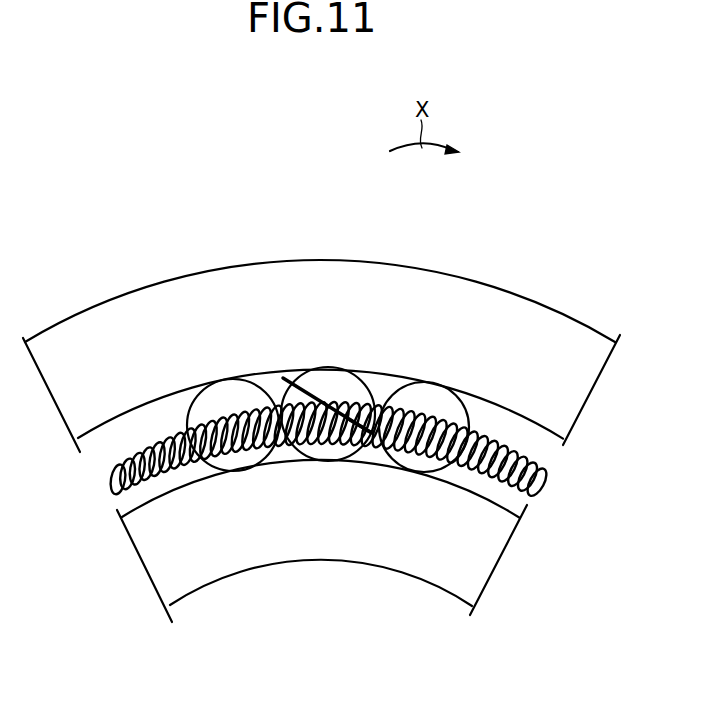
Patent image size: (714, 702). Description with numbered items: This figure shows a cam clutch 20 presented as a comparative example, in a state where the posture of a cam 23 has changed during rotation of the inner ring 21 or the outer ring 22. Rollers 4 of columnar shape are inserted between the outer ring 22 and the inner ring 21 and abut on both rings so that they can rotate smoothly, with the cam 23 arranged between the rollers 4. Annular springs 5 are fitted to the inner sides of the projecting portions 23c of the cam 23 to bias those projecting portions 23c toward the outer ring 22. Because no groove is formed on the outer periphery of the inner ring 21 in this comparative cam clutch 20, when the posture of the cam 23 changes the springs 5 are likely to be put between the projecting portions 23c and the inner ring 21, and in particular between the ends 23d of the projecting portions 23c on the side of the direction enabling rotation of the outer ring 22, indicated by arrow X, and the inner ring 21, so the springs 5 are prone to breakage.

The cam clutch 20 is at (336, 159).
The outer ring 22 is at (515, 303).
The inner ring 21 is at (362, 553).
The rollers 4 is at (225, 397).
The cam 23 is at (363, 373).
The projecting portions 23c is at (323, 383).
The ends 23d is at (399, 415).
The springs 5 is at (110, 480).